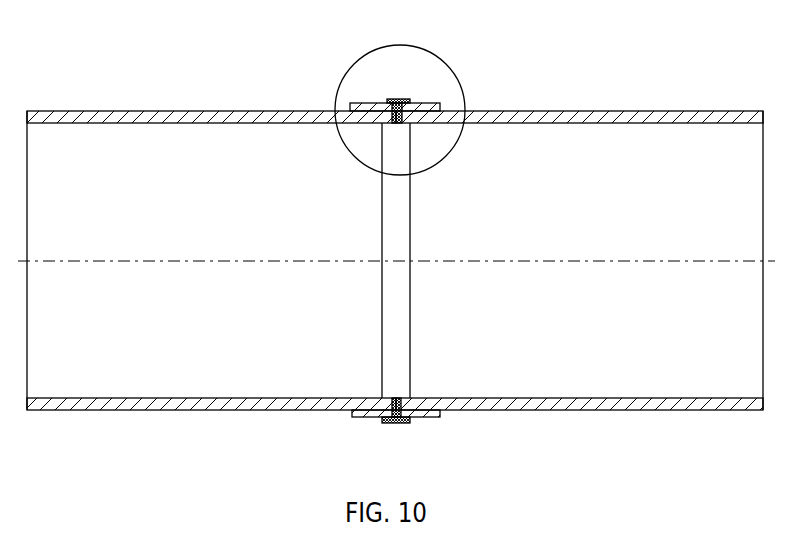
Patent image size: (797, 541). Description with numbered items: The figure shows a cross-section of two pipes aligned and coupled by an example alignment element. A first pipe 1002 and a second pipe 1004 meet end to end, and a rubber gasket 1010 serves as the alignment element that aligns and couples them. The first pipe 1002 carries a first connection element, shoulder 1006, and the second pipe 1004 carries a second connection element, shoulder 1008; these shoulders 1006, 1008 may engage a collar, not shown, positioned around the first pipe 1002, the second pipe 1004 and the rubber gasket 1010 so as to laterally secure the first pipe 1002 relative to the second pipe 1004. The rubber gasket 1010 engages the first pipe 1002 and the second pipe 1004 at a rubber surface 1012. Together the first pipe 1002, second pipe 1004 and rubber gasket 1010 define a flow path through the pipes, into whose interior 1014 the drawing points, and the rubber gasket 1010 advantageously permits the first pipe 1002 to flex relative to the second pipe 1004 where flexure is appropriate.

The first pipe 1002 is at (110, 104).
The second pipe 1004 is at (687, 102).
The shoulder 1006 is at (337, 105).
The shoulder 1008 is at (452, 106).
The rubber gasket 1010 is at (406, 78).
The rubber surface 1012 is at (380, 98).
The pipe interior passage 1014 is at (312, 351).